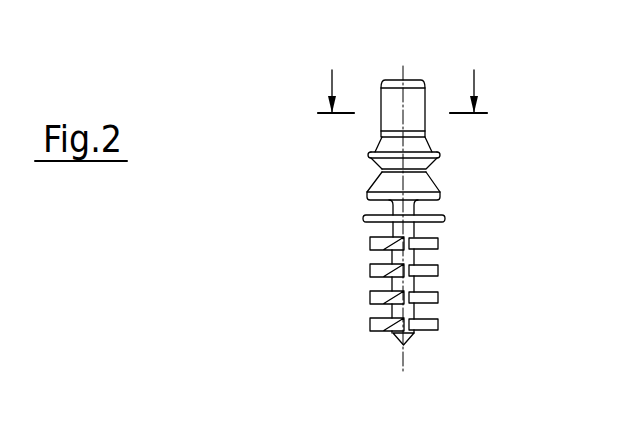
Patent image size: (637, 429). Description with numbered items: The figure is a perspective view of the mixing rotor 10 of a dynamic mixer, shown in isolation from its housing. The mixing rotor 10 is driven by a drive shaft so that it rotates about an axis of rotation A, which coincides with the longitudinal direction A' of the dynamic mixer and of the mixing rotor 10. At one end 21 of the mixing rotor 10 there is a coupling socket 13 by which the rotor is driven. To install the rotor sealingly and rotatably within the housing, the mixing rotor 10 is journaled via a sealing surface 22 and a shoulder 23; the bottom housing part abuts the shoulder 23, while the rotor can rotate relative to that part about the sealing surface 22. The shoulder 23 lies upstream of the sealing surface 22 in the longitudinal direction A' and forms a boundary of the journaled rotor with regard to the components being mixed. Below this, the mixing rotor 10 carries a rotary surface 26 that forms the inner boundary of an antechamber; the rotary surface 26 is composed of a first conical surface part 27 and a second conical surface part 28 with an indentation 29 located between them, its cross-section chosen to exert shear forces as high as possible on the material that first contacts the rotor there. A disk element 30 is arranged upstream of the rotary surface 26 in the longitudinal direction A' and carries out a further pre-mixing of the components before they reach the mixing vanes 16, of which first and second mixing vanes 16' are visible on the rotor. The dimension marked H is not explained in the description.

The mixing rotor 10 is at (345, 207).
The coupling socket 13 is at (410, 78).
The end 21 is at (407, 82).
The sealing surface 22 is at (430, 143).
The shoulder 23 is at (372, 153).
The rotary surface 26 is at (345, 170).
The first conical surface part 27 is at (440, 153).
The second conical surface part 28 is at (442, 192).
The indentation 29 is at (427, 170).
The disk element 30 is at (445, 220).
The mixing vanes 16 is at (401, 315).
The first mixing vane 16' is at (331, 315).
The axis of rotation A is at (435, 228).
The longitudinal direction A' is at (435, 228).
The height H is at (401, 82).